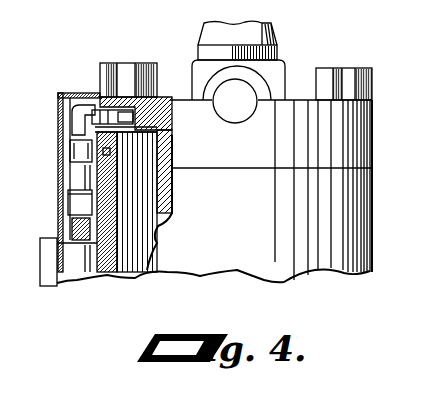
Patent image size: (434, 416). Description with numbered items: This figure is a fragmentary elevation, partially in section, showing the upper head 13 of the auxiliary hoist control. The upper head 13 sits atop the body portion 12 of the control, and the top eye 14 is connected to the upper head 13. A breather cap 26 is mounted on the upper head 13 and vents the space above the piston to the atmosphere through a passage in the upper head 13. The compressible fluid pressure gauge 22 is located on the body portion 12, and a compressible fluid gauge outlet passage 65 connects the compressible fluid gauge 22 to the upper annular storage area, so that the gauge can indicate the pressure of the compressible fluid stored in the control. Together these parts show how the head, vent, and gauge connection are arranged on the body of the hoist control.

The body portion 12 is at (372, 270).
The upper head 13 is at (317, 157).
The top eye 14 is at (272, 34).
The compressible fluid pressure gauge 22 is at (40, 283).
The breather cap 26 is at (244, 107).
The compressible fluid gauge outlet passage 65 is at (120, 110).